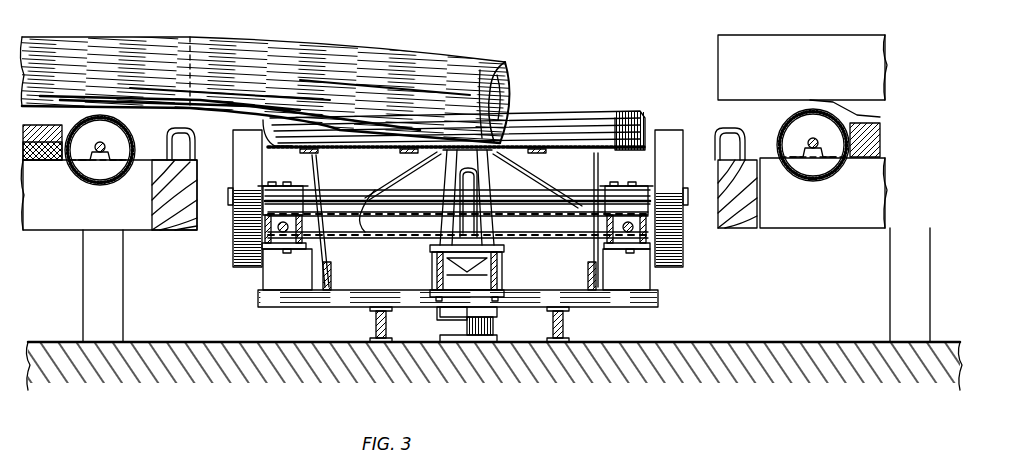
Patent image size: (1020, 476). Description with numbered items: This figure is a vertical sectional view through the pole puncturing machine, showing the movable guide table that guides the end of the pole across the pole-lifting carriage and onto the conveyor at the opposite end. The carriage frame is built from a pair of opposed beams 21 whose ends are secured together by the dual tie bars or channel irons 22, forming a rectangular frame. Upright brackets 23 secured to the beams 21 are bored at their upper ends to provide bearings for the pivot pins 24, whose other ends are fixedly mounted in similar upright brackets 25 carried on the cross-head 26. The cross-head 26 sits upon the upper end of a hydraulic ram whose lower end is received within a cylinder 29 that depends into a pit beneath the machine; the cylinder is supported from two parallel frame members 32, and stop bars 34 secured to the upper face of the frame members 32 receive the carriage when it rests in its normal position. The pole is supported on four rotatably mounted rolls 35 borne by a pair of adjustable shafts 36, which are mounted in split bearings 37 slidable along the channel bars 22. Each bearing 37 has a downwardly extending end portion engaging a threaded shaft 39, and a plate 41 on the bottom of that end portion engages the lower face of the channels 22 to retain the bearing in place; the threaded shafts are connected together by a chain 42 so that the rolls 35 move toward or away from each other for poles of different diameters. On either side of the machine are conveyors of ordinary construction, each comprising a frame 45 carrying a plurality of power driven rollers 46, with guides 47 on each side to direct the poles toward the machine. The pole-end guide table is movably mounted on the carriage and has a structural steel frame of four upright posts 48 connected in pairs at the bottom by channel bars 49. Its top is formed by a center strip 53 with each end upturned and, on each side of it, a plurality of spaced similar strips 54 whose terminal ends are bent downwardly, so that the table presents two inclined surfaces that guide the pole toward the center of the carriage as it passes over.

The beam 21 is at (277, 272).
The dual tie bar 22 is at (272, 233).
The upright bracket 23 is at (497, 228).
The pivot pin 24 is at (466, 78).
The upright bracket 25 is at (492, 178).
The cross-head 26 is at (503, 268).
The cylinder 29 is at (460, 327).
The frame member 32 is at (372, 320).
The stop bar 34 is at (660, 304).
The roll 35 is at (240, 137).
The shaft 36 is at (393, 200).
The split bearing 37 is at (267, 186).
The threaded shaft 39 is at (277, 227).
The plate 41 is at (640, 253).
The chain 42 is at (408, 240).
The frame 45 is at (72, 230).
The power driven roller 46 is at (82, 181).
The guide 47 is at (807, 33).
The upright post 48 is at (322, 167).
The channel bar 49 is at (335, 262).
The center strip 53 is at (552, 150).
The strip 54 is at (568, 126).